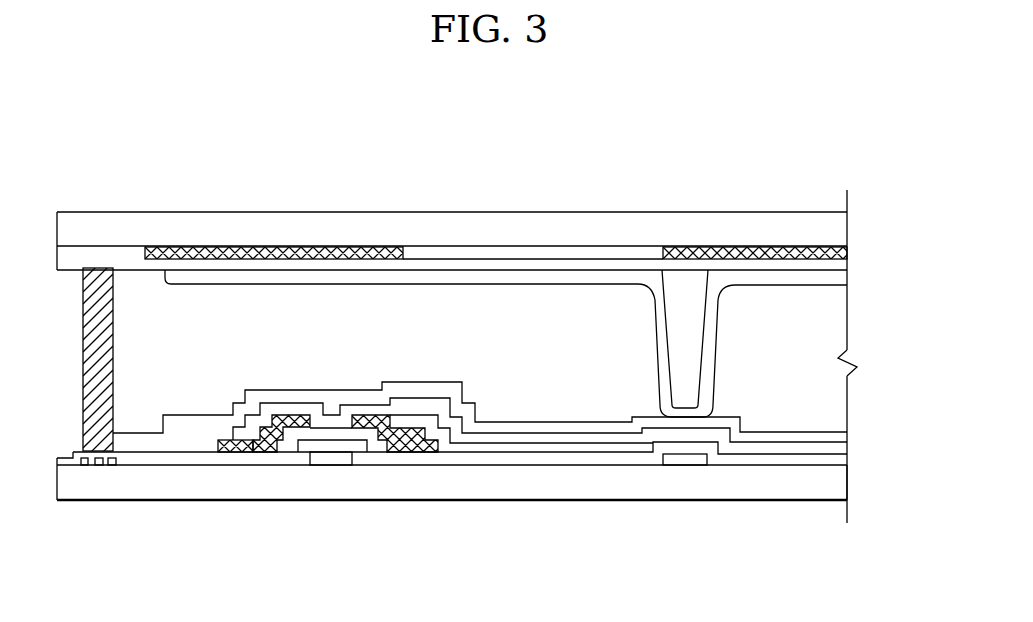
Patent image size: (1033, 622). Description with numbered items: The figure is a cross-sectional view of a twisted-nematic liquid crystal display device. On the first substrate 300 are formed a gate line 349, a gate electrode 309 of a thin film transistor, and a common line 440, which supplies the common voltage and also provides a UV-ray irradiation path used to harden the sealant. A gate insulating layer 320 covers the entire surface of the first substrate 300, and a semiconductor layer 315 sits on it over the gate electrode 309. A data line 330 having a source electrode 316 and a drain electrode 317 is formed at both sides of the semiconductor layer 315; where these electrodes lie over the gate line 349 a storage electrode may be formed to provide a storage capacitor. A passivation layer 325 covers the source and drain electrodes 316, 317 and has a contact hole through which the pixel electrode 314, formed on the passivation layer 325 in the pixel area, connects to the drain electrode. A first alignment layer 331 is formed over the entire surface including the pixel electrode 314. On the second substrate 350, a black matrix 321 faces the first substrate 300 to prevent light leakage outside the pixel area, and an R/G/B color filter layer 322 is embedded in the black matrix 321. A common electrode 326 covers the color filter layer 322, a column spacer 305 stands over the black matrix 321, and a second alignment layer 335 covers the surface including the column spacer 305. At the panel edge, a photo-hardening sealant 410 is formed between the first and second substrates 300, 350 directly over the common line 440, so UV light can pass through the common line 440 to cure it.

The first substrate 300 is at (797, 492).
The column spacer 305 is at (692, 340).
The gate electrode 309 is at (345, 462).
The pixel electrode 314 is at (602, 437).
The semiconductor layer 315 is at (299, 443).
The source electrode 316 is at (254, 447).
The drain electrode 317 is at (417, 430).
The gate insulating layer 320 is at (483, 458).
The black matrix 321 is at (250, 253).
The R/G/B color filter layer 322 is at (478, 252).
The passivation layer 325 is at (175, 443).
The common electrode 326 is at (532, 270).
The data line 330 is at (231, 447).
The first alignment layer 331 is at (838, 433).
The second alignment layer 335 is at (837, 279).
The gate line 349 is at (688, 462).
The second substrate 350 is at (321, 222).
The photo-hardening sealant 410 is at (106, 447).
The common line 440 is at (84, 462).